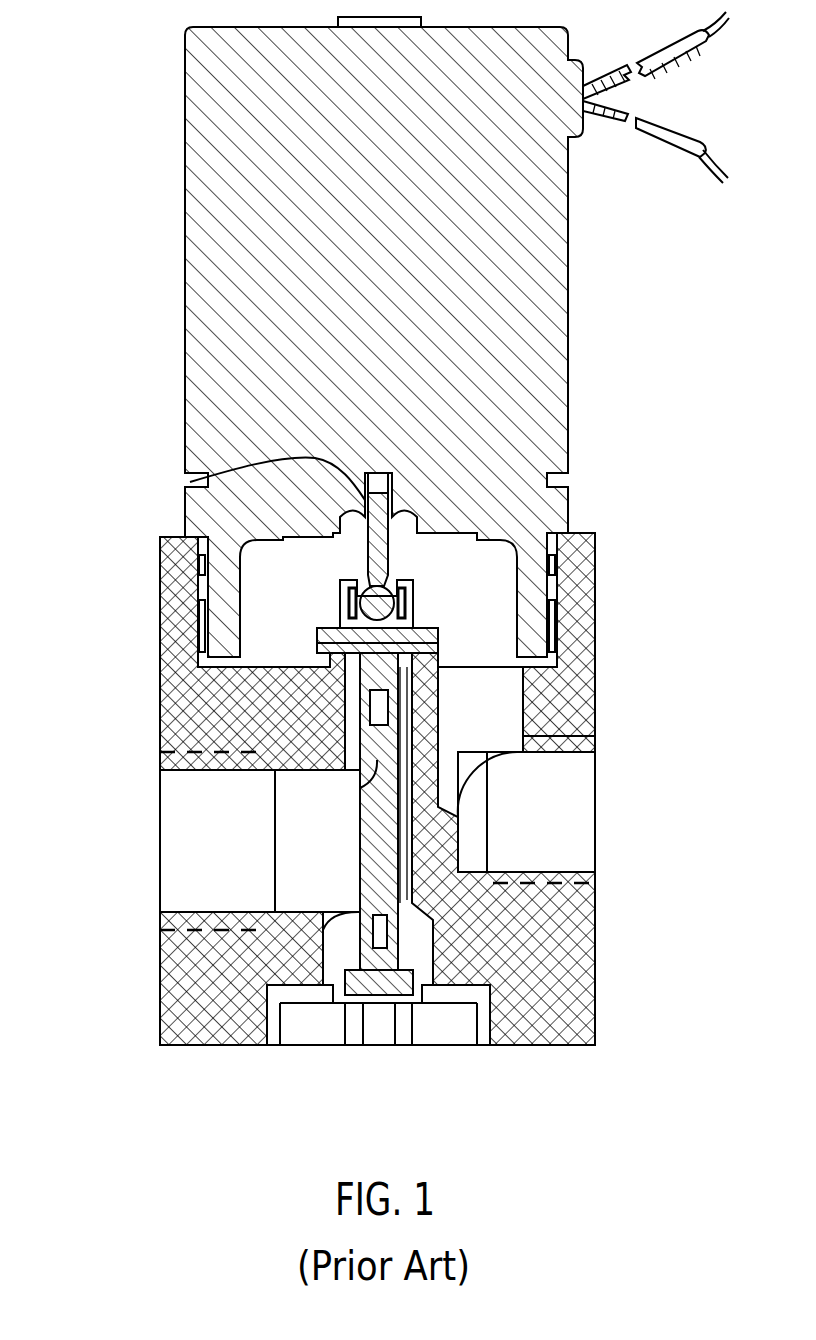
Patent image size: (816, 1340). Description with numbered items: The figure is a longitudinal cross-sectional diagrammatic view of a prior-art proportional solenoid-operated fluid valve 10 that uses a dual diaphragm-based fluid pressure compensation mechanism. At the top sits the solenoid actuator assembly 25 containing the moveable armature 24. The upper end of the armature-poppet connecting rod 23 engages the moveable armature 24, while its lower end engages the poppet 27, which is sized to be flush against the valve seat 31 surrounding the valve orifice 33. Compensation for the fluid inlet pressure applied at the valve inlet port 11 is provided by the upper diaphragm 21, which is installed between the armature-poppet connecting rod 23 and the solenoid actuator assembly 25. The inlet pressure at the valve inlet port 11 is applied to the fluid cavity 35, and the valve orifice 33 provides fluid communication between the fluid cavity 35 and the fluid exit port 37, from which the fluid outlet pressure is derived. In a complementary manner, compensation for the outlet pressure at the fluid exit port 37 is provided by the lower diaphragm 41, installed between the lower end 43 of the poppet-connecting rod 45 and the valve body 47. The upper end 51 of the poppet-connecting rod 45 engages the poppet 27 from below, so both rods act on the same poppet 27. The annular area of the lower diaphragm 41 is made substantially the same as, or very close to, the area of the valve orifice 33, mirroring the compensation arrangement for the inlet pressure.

The solenoid-operated fluid valve 10 is at (101, 73).
The valve inlet port 11 is at (560, 832).
The upper diaphragm 21 is at (347, 547).
The armature-poppet connecting rod 23 is at (390, 560).
The moveable armature 24 is at (195, 482).
The solenoid actuator assembly 25 is at (568, 305).
The poppet 27 is at (407, 622).
The valve seat 31 is at (420, 662).
The valve orifice 33 is at (320, 660).
The fluid cavity 35 is at (377, 609).
The fluid exit port 37 is at (185, 845).
The lower diaphragm 41 is at (332, 1004).
The lower end of poppet-connecting rod 43 is at (362, 950).
The poppet-connecting rod 45 is at (372, 833).
The valve body 47 is at (575, 998).
The upper end of poppet-connecting rod 51 is at (360, 788).